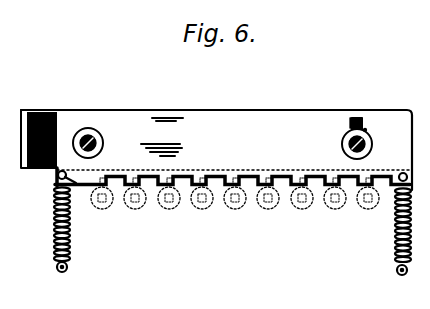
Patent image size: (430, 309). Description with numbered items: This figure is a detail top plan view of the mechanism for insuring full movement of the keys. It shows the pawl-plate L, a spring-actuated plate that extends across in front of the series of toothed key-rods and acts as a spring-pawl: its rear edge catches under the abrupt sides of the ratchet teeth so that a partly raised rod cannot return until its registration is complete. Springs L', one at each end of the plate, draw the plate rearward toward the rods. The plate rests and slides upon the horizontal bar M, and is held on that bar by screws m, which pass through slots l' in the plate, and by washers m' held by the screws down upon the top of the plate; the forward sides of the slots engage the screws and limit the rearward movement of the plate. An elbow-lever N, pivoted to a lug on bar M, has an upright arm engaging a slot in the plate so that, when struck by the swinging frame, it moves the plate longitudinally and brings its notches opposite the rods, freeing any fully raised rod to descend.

The pawl-plate L is at (222, 192).
The springs L' is at (70, 221).
The horizontal bar M is at (54, 112).
The screws m is at (222, 138).
The washers m' is at (237, 145).
The elbow-lever N is at (353, 117).
The slots l' is at (379, 113).
The pins in slots i is at (350, 185).